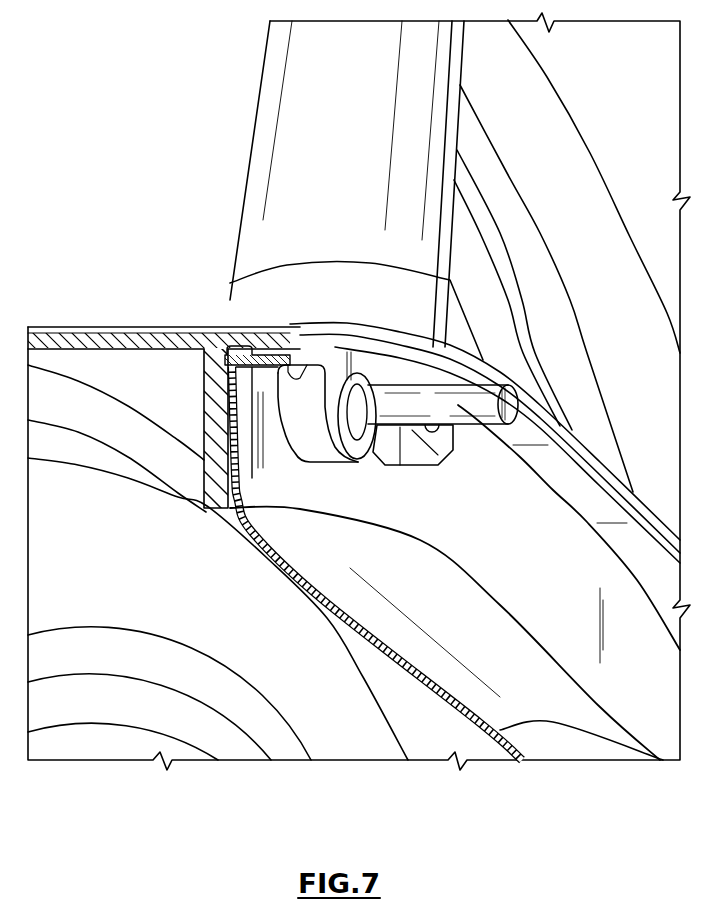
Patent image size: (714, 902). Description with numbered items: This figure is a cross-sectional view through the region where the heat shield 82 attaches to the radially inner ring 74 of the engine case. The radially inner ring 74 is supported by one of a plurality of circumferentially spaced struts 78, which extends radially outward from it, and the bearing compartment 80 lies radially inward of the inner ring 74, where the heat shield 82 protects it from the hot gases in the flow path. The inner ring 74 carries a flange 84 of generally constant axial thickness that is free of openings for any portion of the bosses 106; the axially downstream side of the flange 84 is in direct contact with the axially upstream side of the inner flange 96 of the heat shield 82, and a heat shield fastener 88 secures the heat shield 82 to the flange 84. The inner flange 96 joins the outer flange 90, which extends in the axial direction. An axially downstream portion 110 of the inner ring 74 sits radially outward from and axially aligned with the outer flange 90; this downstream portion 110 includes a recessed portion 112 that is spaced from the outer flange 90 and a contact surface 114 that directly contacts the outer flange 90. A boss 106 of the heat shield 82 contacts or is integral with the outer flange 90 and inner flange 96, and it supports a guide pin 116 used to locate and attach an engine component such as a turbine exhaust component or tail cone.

The radially inner ring 74 is at (68, 325).
The strut 78 is at (320, 143).
The bearing compartment 80 is at (92, 763).
The heat shield 82 is at (488, 655).
The flange 84 is at (202, 399).
The heat shield fastener 88 is at (440, 440).
The outer flange 90 is at (258, 393).
The inner flange 96 is at (250, 480).
The boss 106 is at (320, 458).
The axially downstream portion 110 is at (262, 340).
The recessed portion 112 is at (245, 350).
The contact surface 114 is at (283, 363).
The guide pin 116 is at (510, 400).